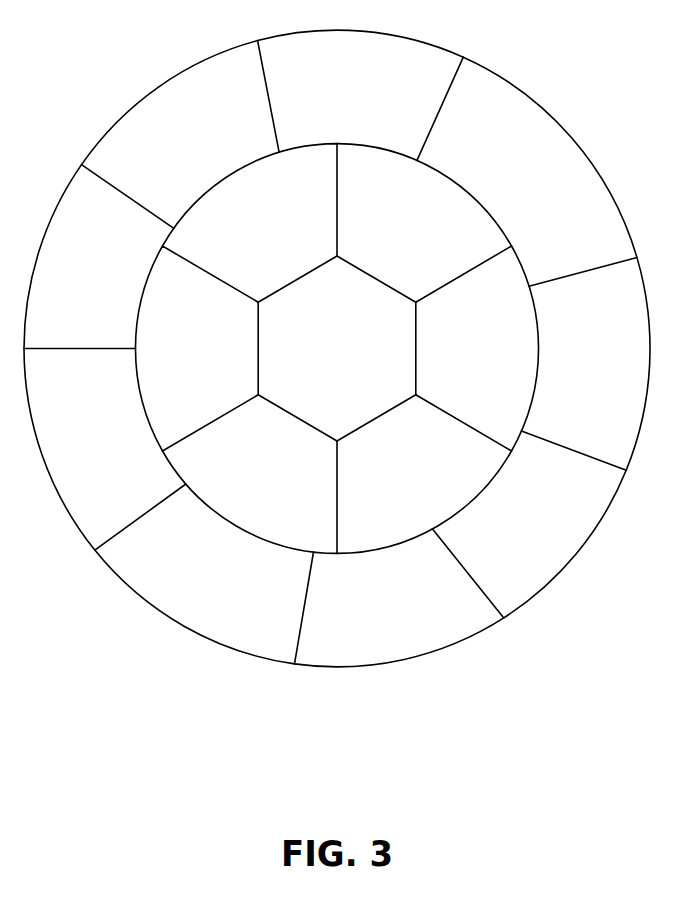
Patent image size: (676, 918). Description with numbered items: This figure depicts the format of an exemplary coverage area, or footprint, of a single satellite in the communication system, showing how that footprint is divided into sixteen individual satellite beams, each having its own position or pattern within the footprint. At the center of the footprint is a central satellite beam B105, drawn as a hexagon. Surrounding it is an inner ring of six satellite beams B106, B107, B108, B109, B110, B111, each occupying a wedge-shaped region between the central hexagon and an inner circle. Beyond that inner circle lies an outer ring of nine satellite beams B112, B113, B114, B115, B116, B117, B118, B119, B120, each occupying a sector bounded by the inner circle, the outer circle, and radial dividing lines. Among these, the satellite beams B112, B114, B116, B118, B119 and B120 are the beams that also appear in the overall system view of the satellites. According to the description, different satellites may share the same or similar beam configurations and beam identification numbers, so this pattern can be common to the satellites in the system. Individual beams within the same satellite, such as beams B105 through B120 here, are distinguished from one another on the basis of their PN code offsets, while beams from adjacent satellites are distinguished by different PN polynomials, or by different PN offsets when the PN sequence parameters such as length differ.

The satellite beam B105 is at (337, 348).
The satellite beam B106 is at (250, 474).
The satellite beam B107 is at (196, 348).
The satellite beam B108 is at (250, 200).
The satellite beam B109 is at (424, 223).
The satellite beam B110 is at (494, 348).
The satellite beam B111 is at (424, 474).
The satellite beam B112 is at (399, 598).
The satellite beam B113 is at (195, 574).
The satellite beam B114 is at (80, 450).
The satellite beam B115 is at (99, 257).
The satellite beam B116 is at (181, 103).
The satellite beam B117 is at (361, 95).
The satellite beam B118 is at (550, 171).
The satellite beam B119 is at (586, 364).
The satellite beam B120 is at (563, 544).